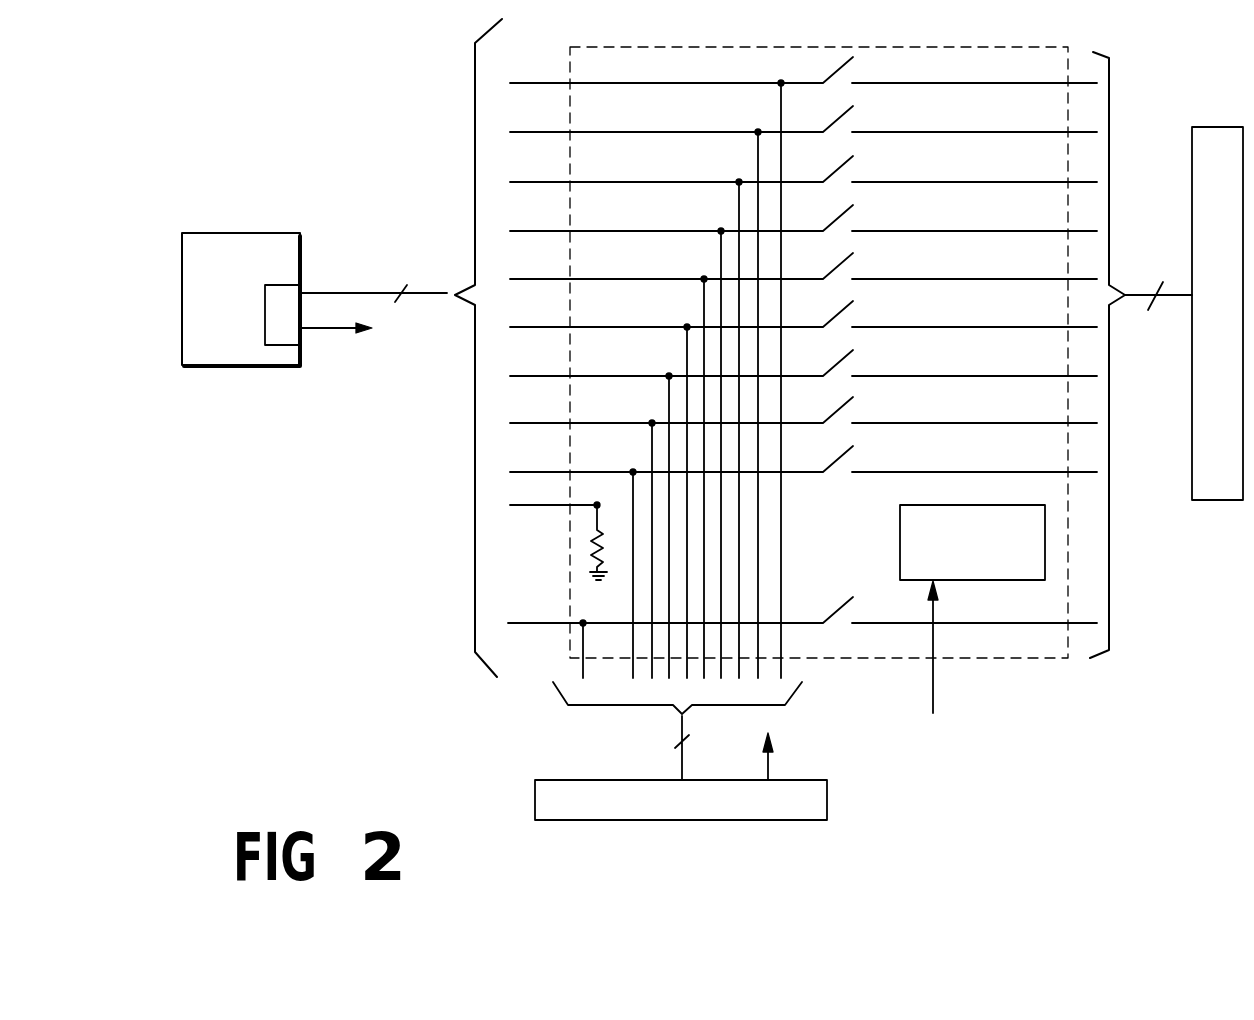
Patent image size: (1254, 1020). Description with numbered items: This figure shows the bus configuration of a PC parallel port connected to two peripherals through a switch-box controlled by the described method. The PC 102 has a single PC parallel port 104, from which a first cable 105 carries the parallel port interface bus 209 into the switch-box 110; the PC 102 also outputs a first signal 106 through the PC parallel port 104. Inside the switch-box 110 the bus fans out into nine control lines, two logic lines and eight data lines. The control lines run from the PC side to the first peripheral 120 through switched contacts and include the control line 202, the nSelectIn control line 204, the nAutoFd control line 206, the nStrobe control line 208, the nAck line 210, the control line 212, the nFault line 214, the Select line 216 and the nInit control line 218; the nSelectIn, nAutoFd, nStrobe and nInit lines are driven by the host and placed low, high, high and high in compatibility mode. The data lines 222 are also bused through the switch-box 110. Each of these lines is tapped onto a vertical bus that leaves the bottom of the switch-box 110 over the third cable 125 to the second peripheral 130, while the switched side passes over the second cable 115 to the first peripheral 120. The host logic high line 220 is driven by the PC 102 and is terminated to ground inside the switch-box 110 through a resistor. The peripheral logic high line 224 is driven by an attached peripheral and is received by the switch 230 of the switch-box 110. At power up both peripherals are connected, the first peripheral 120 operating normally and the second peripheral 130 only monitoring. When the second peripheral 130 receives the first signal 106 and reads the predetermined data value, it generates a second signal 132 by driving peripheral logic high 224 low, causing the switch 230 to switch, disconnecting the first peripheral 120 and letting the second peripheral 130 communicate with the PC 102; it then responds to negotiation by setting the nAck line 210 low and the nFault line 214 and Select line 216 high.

The PC 102 is at (210, 367).
The PC parallel port 104 is at (292, 330).
The first cable 105 is at (347, 291).
The first signal 106 is at (346, 334).
The parallel port interface bus 209 is at (407, 271).
The switch-box 110 is at (975, 47).
The second cable 115 is at (1175, 298).
The first peripheral 120 is at (1222, 505).
The third cable 125 is at (678, 752).
The second peripheral 130 is at (828, 800).
The second signal 132 is at (770, 762).
The control line 202 is at (803, 360).
The nSelectIn control line 204 is at (803, 383).
The nAutoFd control line 206 is at (803, 411).
The nStrobe control line 208 is at (803, 433).
The nAck line 210 is at (803, 458).
The control line 212 is at (803, 481).
The nFault line 214 is at (803, 507).
The Select line 216 is at (803, 531).
The nInit control line 218 is at (803, 555).
The host logic high line 220 is at (558, 526).
The data lines 222 is at (802, 629).
The peripheral logic high line 224 is at (959, 710).
The switch 230 is at (995, 568).